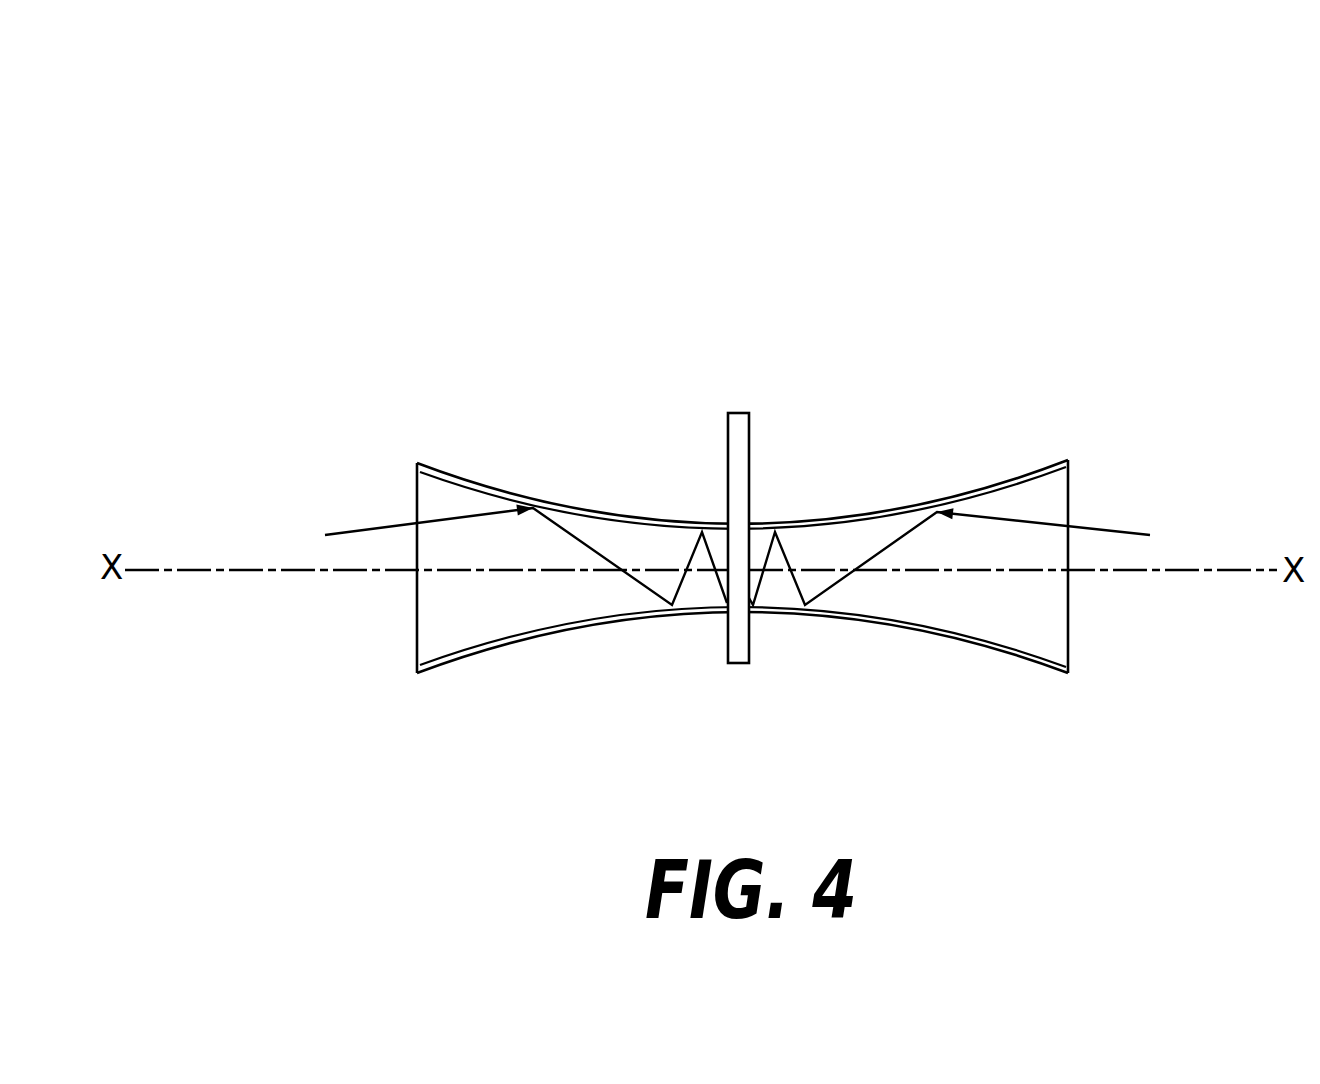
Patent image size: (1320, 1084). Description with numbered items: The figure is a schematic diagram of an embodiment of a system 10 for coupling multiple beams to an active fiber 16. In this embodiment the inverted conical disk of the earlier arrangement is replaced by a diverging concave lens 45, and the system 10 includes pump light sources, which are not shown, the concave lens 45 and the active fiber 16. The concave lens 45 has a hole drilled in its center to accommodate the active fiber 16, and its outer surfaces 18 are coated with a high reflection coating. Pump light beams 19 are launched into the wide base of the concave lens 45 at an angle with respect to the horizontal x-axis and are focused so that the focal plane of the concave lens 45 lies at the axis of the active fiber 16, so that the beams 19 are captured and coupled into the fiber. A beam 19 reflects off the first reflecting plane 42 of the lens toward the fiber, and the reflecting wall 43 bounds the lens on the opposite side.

The system for coupling multiple beams to an active fiber 10 is at (884, 195).
The active fiber 16 is at (712, 507).
The outer surfaces 18 is at (872, 625).
The pump light beams 19 is at (372, 545).
The first reflecting plane 42 is at (1032, 647).
The upper wall 43 is at (985, 487).
The concave lens 45 is at (1046, 493).